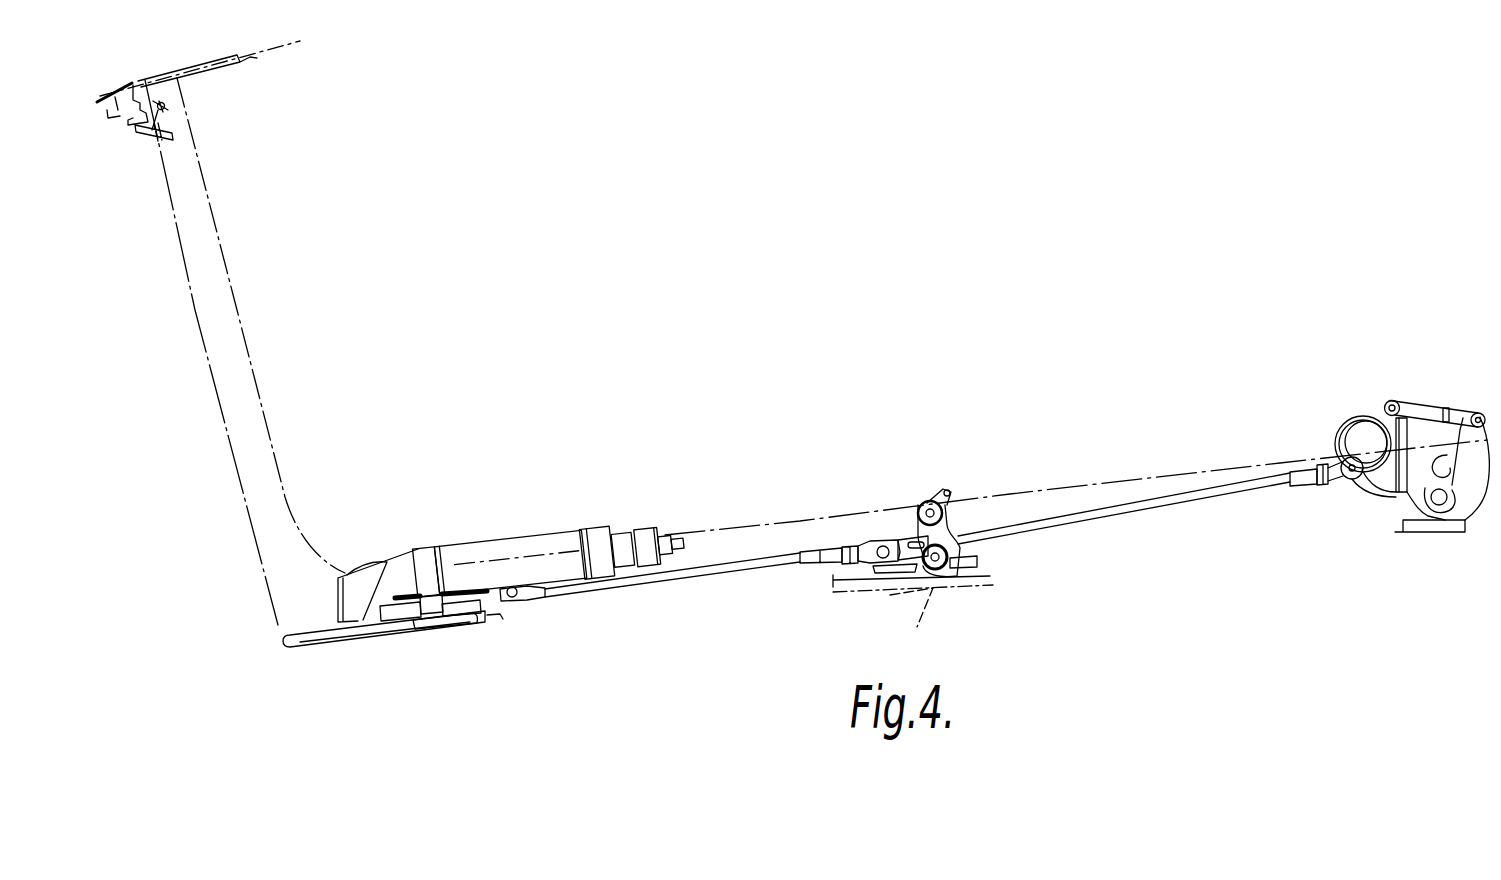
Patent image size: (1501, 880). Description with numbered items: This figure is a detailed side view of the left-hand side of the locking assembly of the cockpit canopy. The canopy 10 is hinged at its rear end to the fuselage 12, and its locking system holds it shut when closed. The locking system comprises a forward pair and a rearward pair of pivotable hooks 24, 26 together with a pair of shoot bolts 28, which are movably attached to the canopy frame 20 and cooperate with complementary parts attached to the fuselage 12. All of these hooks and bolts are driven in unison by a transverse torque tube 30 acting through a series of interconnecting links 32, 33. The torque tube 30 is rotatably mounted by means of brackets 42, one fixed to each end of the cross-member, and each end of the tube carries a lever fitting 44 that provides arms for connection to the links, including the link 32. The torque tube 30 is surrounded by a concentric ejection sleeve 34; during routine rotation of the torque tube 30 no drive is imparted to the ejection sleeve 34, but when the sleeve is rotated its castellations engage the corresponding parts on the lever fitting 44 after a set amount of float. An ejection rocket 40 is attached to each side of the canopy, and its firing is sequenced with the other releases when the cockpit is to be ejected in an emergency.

The canopy 10 is at (252, 55).
The fuselage 12 is at (364, 716).
The canopy frame 20 is at (1200, 481).
The forward pivotable hook 24 is at (950, 500).
The rearward pivotable hook 26 is at (1470, 498).
The shoot bolt 28 is at (357, 627).
The torque tube 30 is at (1353, 437).
The interconnecting link 32 is at (1157, 502).
The interconnecting link 33 is at (765, 573).
The ejection sleeve 34 is at (1358, 438).
The ejection rocket 40 is at (559, 553).
The bracket 42 is at (1392, 485).
The lever fitting 44 is at (1340, 486).